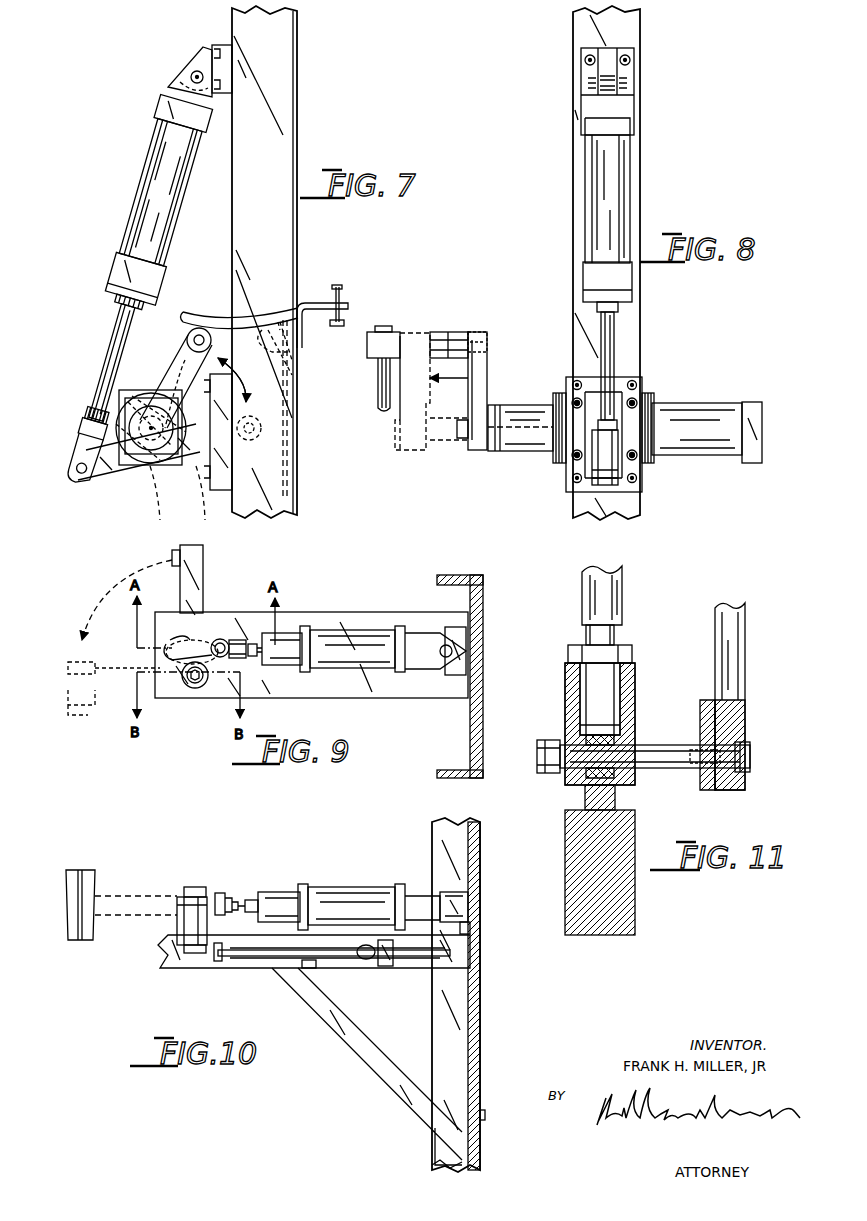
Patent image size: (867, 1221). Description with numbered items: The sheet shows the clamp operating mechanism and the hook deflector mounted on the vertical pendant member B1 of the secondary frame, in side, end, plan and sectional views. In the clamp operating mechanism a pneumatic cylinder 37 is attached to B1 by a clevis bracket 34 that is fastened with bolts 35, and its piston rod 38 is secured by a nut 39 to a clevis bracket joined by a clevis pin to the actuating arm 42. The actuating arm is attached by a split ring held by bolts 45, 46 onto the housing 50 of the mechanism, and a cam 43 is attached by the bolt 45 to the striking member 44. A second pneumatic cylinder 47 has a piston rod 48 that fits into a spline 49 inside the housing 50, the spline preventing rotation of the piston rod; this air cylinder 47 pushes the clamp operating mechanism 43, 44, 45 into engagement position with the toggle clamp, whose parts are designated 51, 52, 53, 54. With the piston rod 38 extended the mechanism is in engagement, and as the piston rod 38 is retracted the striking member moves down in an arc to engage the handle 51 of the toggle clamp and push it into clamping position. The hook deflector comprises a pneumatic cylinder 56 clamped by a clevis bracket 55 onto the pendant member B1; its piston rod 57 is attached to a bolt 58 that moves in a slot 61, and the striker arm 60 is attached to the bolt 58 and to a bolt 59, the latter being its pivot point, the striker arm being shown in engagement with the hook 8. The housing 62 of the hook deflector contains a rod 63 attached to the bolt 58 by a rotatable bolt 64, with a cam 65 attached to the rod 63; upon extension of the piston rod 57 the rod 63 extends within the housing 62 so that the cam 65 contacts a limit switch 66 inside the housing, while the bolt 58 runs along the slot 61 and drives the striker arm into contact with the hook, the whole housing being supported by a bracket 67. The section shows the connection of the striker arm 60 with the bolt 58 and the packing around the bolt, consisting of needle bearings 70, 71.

In FIG. 7, the pendant member of secondary frame B1 is at (266, 184).
In FIG. 8, the pendant member of secondary frame B1 is at (632, 34).
In FIG. 9, the pendant member of secondary frame B1 is at (483, 586).
In FIG. 10, the pendant member of secondary frame B1 is at (480, 880).
In FIG. 7, the clevis bracket 34 is at (205, 66).
In FIG. 8, the clevis bracket 34 is at (630, 70).
In FIG. 7, the bolts 35 is at (213, 50).
In FIG. 8, the bolts 35 is at (586, 62).
In FIG. 8, the pneumatic cylinder 37 is at (626, 200).
In FIG. 8, the piston rod 38 is at (614, 347).
In FIG. 8, the nut 39 is at (640, 460).
In FIG. 7, the actuating arm 42 is at (110, 474).
In FIG. 7, the cam 43 is at (222, 318).
In FIG. 8, the cam 43 is at (488, 378).
In FIG. 8, the striking member 44 is at (440, 332).
In FIG. 7, the bolt 45 is at (163, 500).
In FIG. 8, the bolt 45 is at (470, 334).
In FIG. 7, the bolt 46 is at (202, 500).
In FIG. 7, the pneumatic cylinder 47 is at (178, 466).
In FIG. 8, the pneumatic cylinder 47 is at (728, 405).
In FIG. 8, the piston rod 48 is at (654, 410).
In FIG. 8, the spline 49 is at (503, 452).
In FIG. 7, the housing 50 is at (150, 394).
In FIG. 8, the housing 50 is at (538, 450).
In FIG. 7, the handle of toggle clamp 51 is at (188, 320).
In FIG. 8, the handle of toggle clamp 51 is at (384, 326).
In FIG. 7, the toggle clamp element 52 is at (300, 420).
In FIG. 8, the toggle clamp element 52 is at (378, 374).
In FIG. 7, the toggle clamp element 53 is at (276, 352).
In FIG. 7, the toggle clamp element 54 is at (311, 300).
In FIG. 9, the clevis bracket 55 is at (442, 636).
In FIG. 10, the clevis bracket 55 is at (424, 895).
In FIG. 9, the pneumatic cylinder 56 is at (335, 672).
In FIG. 10, the pneumatic cylinder 56 is at (340, 888).
In FIG. 9, the piston rod 57 is at (258, 660).
In FIG. 10, the piston rod 57 is at (252, 900).
In FIG. 11, the piston rod 57 is at (618, 635).
In FIG. 9, the bolt 58 is at (222, 638).
In FIG. 10, the bolt 58 is at (220, 893).
In FIG. 11, the bolt 58 is at (688, 770).
In FIG. 9, the bolt 59 is at (198, 690).
In FIG. 10, the bolt 59 is at (198, 888).
In FIG. 9, the striker arm 60 is at (192, 688).
In FIG. 10, the striker arm 60 is at (177, 905).
In FIG. 11, the striker arm 60 is at (636, 900).
In FIG. 9, the slot 61 is at (185, 614).
In FIG. 9, the housing 62 is at (346, 614).
In FIG. 10, the housing 62 is at (162, 956).
In FIG. 10, the rod 63 is at (262, 962).
In FIG. 11, the rod 63 is at (742, 667).
In FIG. 10, the rotatable bolt 64 is at (218, 962).
In FIG. 11, the rotatable bolt 64 is at (750, 760).
In FIG. 10, the cam 65 is at (372, 966).
In FIG. 10, the limit switch 66 is at (302, 967).
In FIG. 10, the bracket 67 is at (352, 1028).
In FIG. 11, the needle bearing 70 is at (616, 744).
In FIG. 11, the needle bearing 71 is at (615, 785).
In FIG. 9, the hook 8 is at (90, 712).